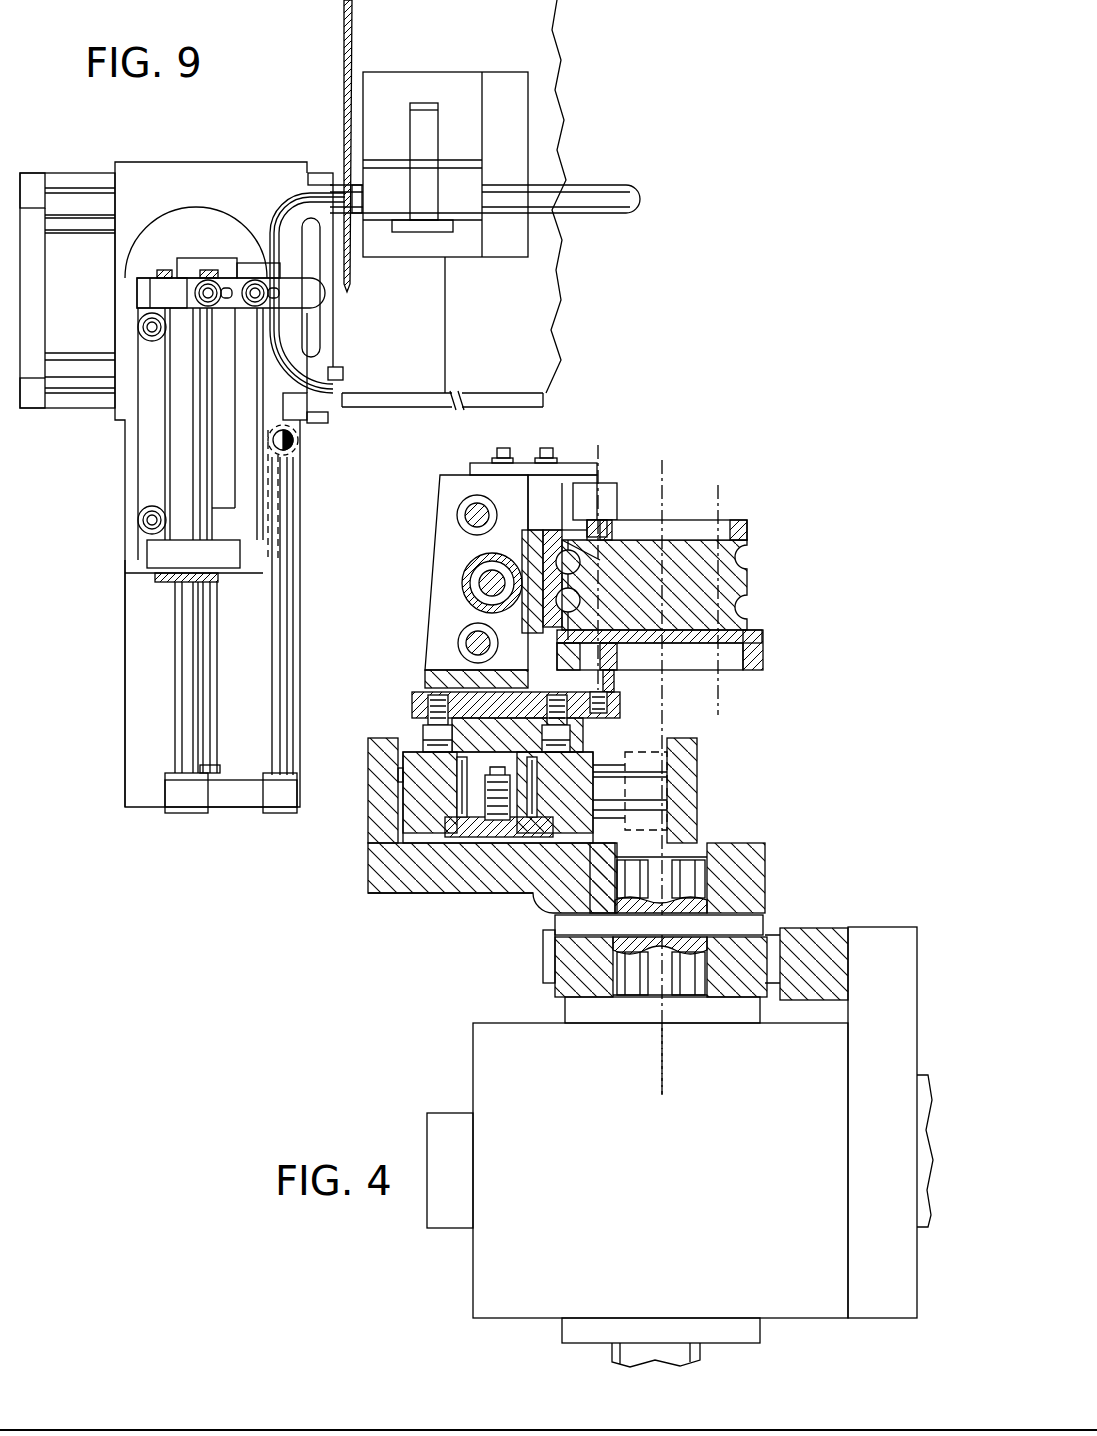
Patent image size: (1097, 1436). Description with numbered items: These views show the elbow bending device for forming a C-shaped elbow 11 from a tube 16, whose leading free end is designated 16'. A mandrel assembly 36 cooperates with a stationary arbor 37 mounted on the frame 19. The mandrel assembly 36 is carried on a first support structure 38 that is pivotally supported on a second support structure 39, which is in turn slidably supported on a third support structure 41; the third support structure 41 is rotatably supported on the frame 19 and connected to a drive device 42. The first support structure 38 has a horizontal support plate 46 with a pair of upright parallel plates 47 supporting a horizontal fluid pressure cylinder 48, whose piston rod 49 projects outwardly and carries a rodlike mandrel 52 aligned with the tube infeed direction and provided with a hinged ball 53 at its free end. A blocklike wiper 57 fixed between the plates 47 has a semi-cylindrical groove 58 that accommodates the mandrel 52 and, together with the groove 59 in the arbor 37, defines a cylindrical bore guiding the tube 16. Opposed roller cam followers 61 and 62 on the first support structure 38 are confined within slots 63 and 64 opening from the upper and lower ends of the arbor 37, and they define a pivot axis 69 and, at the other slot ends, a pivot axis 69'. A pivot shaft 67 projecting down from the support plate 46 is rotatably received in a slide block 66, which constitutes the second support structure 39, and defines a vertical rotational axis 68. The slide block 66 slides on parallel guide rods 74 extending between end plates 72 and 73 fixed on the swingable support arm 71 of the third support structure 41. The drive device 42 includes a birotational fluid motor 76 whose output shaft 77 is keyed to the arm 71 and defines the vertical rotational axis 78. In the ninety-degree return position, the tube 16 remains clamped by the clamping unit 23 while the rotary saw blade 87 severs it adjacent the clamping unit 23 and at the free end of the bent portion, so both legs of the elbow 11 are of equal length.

In FIG. 9, the elbow 11 is at (262, 195).
In FIG. 9, the tube 16 is at (485, 174).
In FIG. 9, the leading free end of the tube 16' is at (376, 236).
In FIG. 4, the frame 19 is at (880, 945).
In FIG. 9, the clamping unit 23 is at (448, 127).
In FIG. 4, the mandrel assembly 36 is at (432, 568).
In FIG. 9, the stationary arbor 37 is at (298, 358).
In FIG. 4, the stationary arbor 37 is at (705, 578).
In FIG. 4, the first support structure 38 is at (413, 680).
In FIG. 4, the second support structure 39 is at (605, 745).
In FIG. 4, the third support structure 41 is at (422, 900).
In FIG. 4, the drive device 42 is at (453, 1098).
In FIG. 9, the support plate 46 is at (137, 627).
In FIG. 4, the support plate 46 is at (460, 702).
In FIG. 4, the parallel plates 47 is at (447, 490).
In FIG. 9, the fluid pressure cylinder 48 is at (183, 482).
In FIG. 4, the fluid pressure cylinder 48 is at (478, 583).
In FIG. 9, the piston rod 49 is at (185, 722).
In FIG. 9, the mandrel 52 is at (280, 632).
In FIG. 9, the ball 53 is at (288, 448).
In FIG. 4, the ball 53 is at (468, 515).
In FIG. 9, the wiper 57 is at (270, 418).
In FIG. 4, the wiper 57 is at (553, 583).
In FIG. 4, the groove 58 is at (550, 545).
In FIG. 4, the groove 59 is at (572, 555).
In FIG. 4, the cam follower 61 is at (590, 530).
In FIG. 4, the cam follower 62 is at (612, 655).
In FIG. 9, the slot 63 is at (322, 328).
In FIG. 4, the slot 63 is at (705, 520).
In FIG. 4, the slot 64 is at (700, 660).
In FIG. 9, the slide block 66 is at (137, 178).
In FIG. 4, the slide block 66 is at (590, 800).
In FIG. 4, the pivot shaft 67 is at (470, 770).
In FIG. 4, the rotational axis 68 is at (505, 737).
In FIG. 4, the pivot axis 69 is at (610, 541).
In FIG. 4, the pivot axis 69' is at (686, 643).
In FIG. 4, the swingable support arm 71 is at (475, 875).
In FIG. 9, the end plate 72 is at (35, 330).
In FIG. 4, the end plate 72 is at (383, 795).
In FIG. 9, the end plate 73 is at (322, 178).
In FIG. 4, the end plate 73 is at (690, 800).
In FIG. 9, the guide rods 74 is at (70, 205).
In FIG. 4, the guide rods 74 is at (640, 780).
In FIG. 4, the fluid motor 76 is at (493, 1247).
In FIG. 4, the output shaft 77 is at (700, 875).
In FIG. 4, the rotational axis 78 is at (660, 1033).
In FIG. 9, the rotary saw blade 87 is at (343, 113).